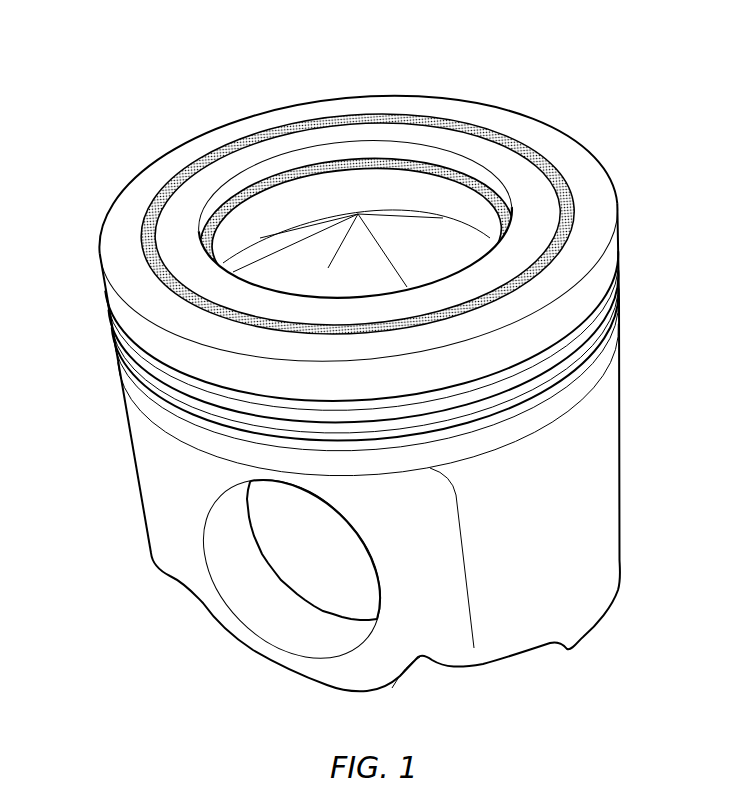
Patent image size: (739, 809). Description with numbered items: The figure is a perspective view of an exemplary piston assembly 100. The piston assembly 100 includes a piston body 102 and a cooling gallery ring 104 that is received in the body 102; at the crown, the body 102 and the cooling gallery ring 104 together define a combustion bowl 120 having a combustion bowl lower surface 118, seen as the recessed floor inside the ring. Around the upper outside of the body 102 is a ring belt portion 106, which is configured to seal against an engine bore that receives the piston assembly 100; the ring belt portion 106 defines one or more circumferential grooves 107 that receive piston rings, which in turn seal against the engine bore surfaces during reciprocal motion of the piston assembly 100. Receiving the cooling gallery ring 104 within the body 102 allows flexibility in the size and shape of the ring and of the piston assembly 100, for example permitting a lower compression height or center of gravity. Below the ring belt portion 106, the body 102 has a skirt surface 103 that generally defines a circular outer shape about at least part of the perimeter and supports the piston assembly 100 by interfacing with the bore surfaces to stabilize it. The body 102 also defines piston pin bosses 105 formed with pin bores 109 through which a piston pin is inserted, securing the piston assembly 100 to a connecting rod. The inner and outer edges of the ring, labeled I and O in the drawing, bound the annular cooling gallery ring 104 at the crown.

The piston assembly 100 is at (573, 73).
The piston body 102 is at (558, 428).
The skirt surface 103 is at (570, 566).
The cooling gallery ring 104 is at (533, 198).
The piston pin bosses 105 is at (266, 600).
The ring belt portion 106 is at (587, 293).
The circumferential grooves 107 is at (128, 360).
The pin bores 109 is at (218, 525).
The combustion bowl lower surface 118 is at (410, 250).
The combustion bowl 120 is at (377, 155).
The inner ring I is at (262, 187).
The outer ring O is at (141, 233).